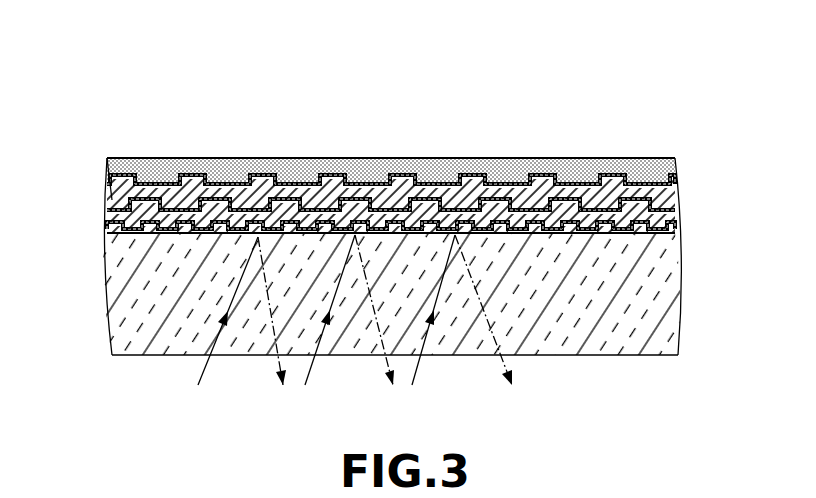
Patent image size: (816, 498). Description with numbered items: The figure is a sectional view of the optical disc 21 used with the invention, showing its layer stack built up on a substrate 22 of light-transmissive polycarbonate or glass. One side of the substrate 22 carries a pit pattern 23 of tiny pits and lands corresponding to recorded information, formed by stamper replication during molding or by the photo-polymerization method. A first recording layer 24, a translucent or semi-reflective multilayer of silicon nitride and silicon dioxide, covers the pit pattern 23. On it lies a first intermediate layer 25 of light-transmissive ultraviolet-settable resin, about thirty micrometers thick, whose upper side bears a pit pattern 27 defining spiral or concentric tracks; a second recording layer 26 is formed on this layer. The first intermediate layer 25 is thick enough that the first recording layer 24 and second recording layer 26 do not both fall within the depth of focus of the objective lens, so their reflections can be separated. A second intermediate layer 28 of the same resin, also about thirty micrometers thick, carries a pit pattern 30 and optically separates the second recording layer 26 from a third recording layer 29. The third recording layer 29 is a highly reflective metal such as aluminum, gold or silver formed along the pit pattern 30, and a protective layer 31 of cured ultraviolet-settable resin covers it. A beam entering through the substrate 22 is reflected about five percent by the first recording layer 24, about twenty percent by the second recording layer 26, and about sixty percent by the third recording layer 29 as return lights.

The optical disc 21 is at (375, 142).
The substrate 22 is at (660, 333).
The pit pattern 23 is at (605, 237).
The first recording layer 24 is at (660, 237).
The first intermediate layer 25 is at (665, 230).
The second recording layer 26 is at (670, 212).
The pit pattern 27 is at (640, 190).
The second intermediate layer 28 is at (670, 181).
The third recording layer 29 is at (612, 172).
The pit pattern 30 is at (408, 200).
The protective layer 31 is at (553, 165).